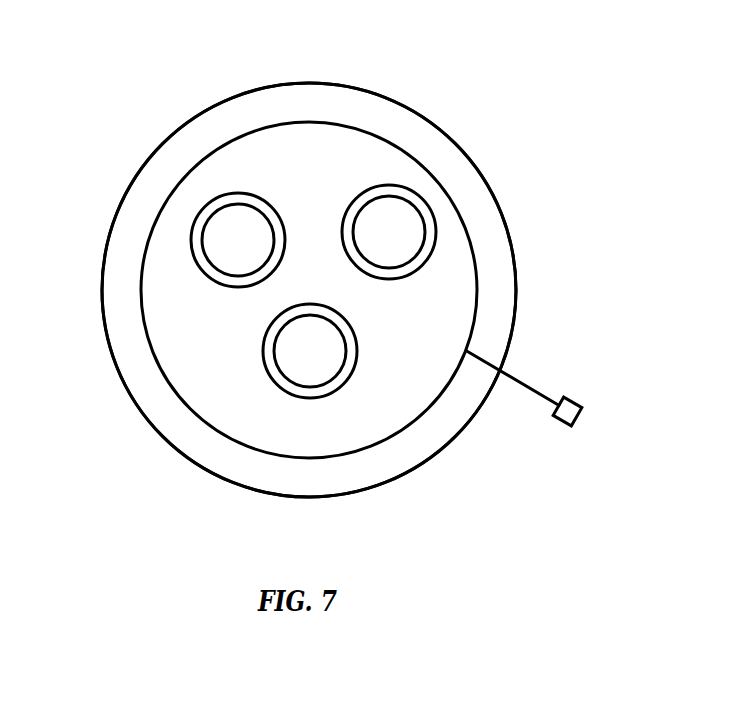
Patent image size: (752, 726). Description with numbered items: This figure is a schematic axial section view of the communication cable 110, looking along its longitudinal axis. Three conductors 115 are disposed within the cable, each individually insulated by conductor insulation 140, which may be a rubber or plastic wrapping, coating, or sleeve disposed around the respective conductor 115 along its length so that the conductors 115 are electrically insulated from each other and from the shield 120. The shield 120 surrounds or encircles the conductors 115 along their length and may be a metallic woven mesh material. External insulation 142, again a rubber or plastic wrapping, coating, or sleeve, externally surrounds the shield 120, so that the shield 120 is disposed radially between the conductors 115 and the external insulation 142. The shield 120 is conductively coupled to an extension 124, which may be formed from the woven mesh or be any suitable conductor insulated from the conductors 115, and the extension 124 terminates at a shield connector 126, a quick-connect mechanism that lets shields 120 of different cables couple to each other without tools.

The communication cable 110 is at (477, 63).
The conductor 115 is at (237, 203).
The shield 120 is at (478, 283).
The extension 124 is at (525, 383).
The shield connector 126 is at (575, 395).
The conductor insulation 140 is at (190, 232).
The external insulation 142 is at (517, 292).